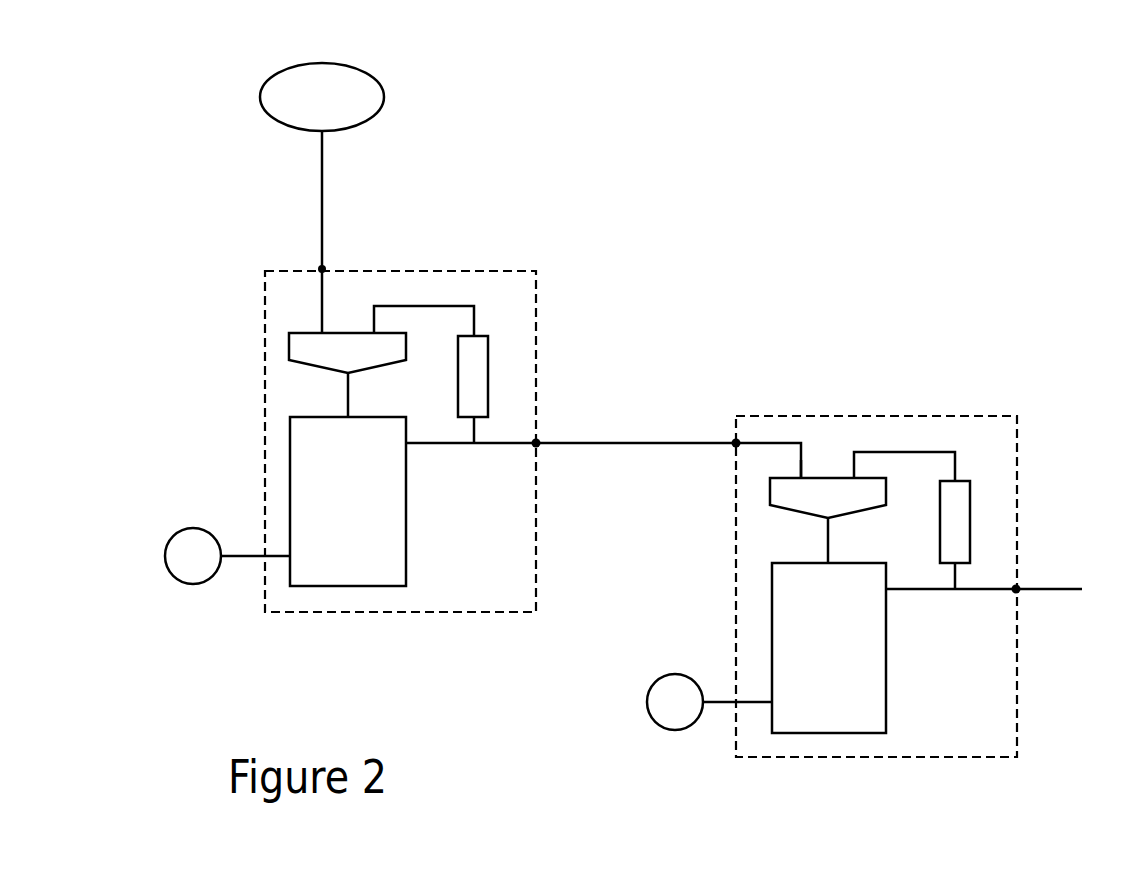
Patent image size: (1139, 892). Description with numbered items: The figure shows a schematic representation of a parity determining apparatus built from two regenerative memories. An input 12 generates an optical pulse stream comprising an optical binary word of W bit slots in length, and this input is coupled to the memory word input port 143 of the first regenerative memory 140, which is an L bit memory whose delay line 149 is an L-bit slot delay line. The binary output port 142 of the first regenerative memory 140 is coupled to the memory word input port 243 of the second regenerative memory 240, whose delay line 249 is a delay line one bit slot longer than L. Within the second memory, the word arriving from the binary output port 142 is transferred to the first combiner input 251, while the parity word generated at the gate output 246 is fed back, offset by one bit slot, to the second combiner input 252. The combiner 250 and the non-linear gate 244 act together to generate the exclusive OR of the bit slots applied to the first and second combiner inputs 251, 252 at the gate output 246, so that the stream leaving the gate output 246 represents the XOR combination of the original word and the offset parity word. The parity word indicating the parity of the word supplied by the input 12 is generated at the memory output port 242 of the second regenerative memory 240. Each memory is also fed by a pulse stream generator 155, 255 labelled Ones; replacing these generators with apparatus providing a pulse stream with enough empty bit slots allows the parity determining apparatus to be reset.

The input 12 is at (383, 84).
The memory word input port 143 is at (324, 267).
The first regenerative memory 140 is at (487, 630).
The delay line 149 is at (488, 358).
The binary output port 142 is at (537, 442).
The pulse stream generator 155 is at (193, 528).
The second regenerative memory 240 is at (890, 761).
The memory word input port 243 is at (734, 445).
The first combiner input 251 is at (802, 477).
The second combiner input 252 is at (850, 477).
The combiner 250 is at (851, 518).
The delay line 249 is at (971, 505).
The gate output 246 is at (887, 590).
The memory output port 242 is at (1018, 588).
The non-linear gate 244 is at (887, 723).
The pulse stream generator 255 is at (664, 730).